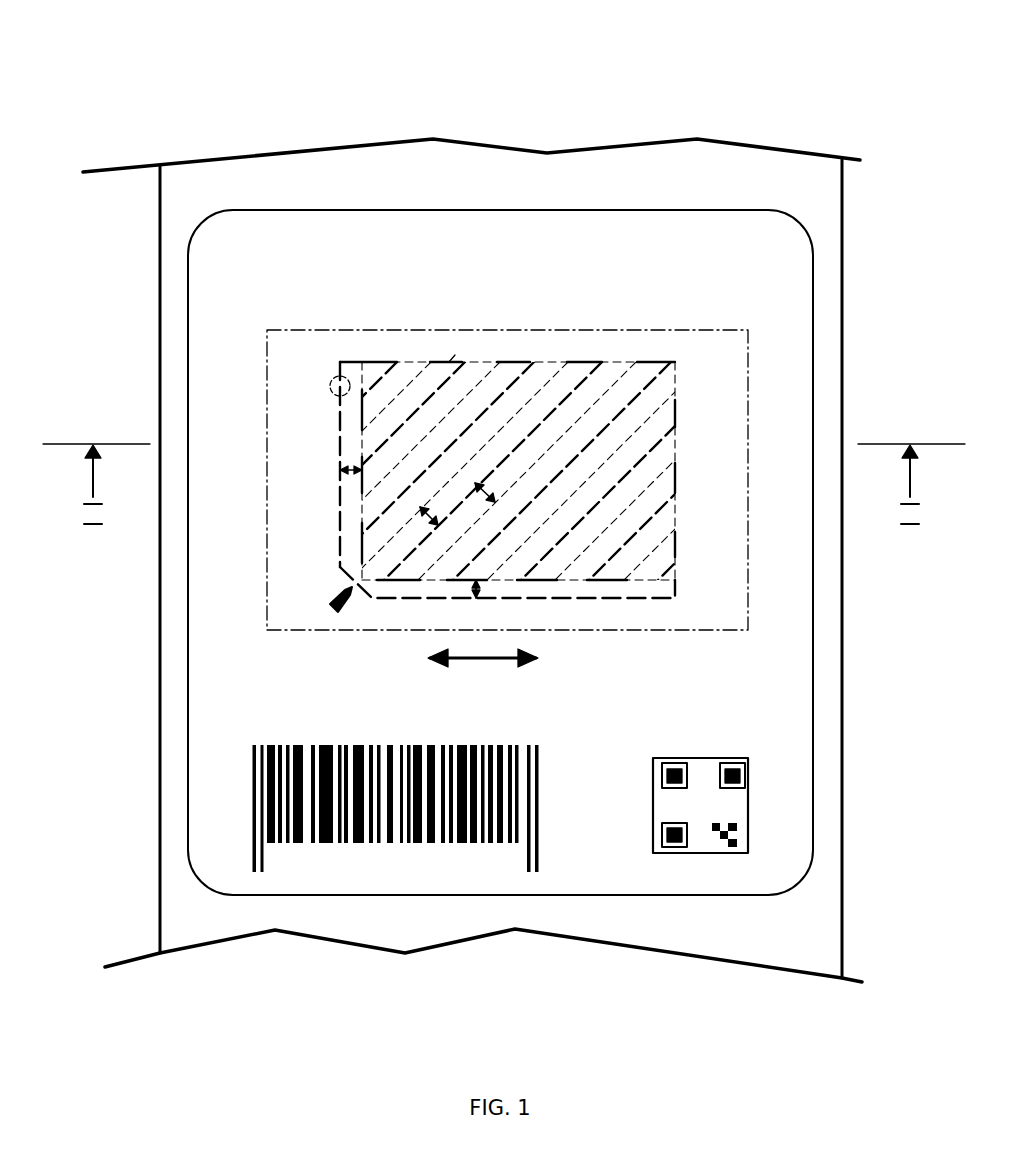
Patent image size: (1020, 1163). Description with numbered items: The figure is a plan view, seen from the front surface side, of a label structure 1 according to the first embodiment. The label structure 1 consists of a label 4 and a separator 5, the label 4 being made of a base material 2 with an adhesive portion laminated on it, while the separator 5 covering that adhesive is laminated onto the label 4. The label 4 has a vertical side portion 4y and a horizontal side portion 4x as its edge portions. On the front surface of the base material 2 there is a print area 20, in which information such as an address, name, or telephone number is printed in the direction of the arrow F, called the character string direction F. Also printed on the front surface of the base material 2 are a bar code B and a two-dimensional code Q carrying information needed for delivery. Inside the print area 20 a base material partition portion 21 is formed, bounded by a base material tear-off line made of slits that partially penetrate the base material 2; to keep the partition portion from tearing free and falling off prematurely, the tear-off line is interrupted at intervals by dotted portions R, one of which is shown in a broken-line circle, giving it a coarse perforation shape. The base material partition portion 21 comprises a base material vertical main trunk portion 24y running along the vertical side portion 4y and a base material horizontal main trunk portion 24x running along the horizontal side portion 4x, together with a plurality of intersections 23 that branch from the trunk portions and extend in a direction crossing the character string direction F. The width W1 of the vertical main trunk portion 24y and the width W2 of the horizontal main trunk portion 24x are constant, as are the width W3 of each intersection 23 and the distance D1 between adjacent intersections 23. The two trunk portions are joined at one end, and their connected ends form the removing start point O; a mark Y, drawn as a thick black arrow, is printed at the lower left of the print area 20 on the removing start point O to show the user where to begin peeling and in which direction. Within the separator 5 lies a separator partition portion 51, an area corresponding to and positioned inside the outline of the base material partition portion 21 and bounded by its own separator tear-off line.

The label structure 1 is at (524, 110).
The base material 2 is at (803, 318).
The label 4 is at (730, 208).
The horizontal side portion 4x is at (415, 895).
The vertical side portion 4y is at (188, 312).
The separator 5 is at (825, 222).
The print area 20 is at (648, 330).
The base material partition portion 21 is at (515, 360).
The intersections 23 is at (455, 355).
The base material horizontal main trunk portion 24x is at (565, 590).
The base material vertical main trunk portion 24y is at (350, 443).
The separator partition portion 51 is at (345, 360).
The dotted portions R is at (330, 380).
The removing start point O is at (338, 579).
The mark Y is at (342, 608).
The character string direction F is at (483, 675).
The width of the base material vertical main trunk portion W1 is at (331, 479).
The width of the base material horizontal main trunk portion W2 is at (480, 604).
The width of the intersection W3 is at (442, 504).
The distance between the intersections D1 is at (499, 485).
The bar code B is at (322, 856).
The two-dimensional code Q is at (720, 856).